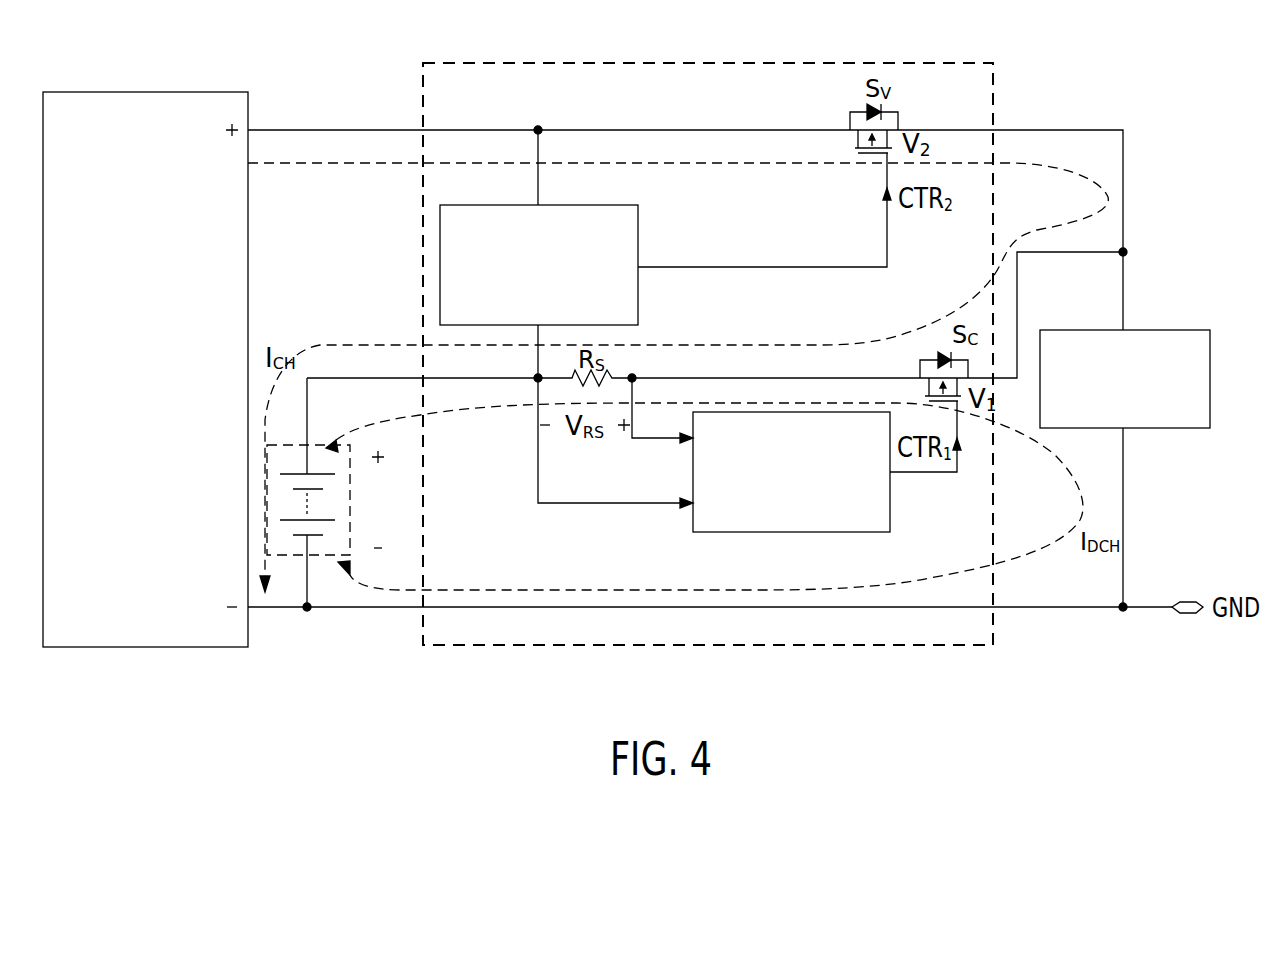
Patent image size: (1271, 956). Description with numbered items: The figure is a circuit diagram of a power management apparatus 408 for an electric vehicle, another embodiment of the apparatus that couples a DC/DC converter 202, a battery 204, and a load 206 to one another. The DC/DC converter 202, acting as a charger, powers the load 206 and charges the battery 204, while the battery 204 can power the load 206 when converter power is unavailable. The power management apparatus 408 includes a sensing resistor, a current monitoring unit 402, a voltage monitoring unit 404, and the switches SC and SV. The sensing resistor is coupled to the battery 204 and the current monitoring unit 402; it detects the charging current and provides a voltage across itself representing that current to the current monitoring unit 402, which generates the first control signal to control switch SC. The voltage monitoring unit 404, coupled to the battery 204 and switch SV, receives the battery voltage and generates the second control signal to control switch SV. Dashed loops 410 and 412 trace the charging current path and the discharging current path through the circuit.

The DC/DC converter 202 is at (160, 92).
The battery 204 is at (348, 443).
The load 206 is at (1160, 330).
The current monitoring unit 402 is at (800, 532).
The voltage monitoring unit 404 is at (600, 205).
The power management apparatus 408 is at (718, 63).
The charging current path 410 is at (752, 345).
The discharging current path 412 is at (545, 590).